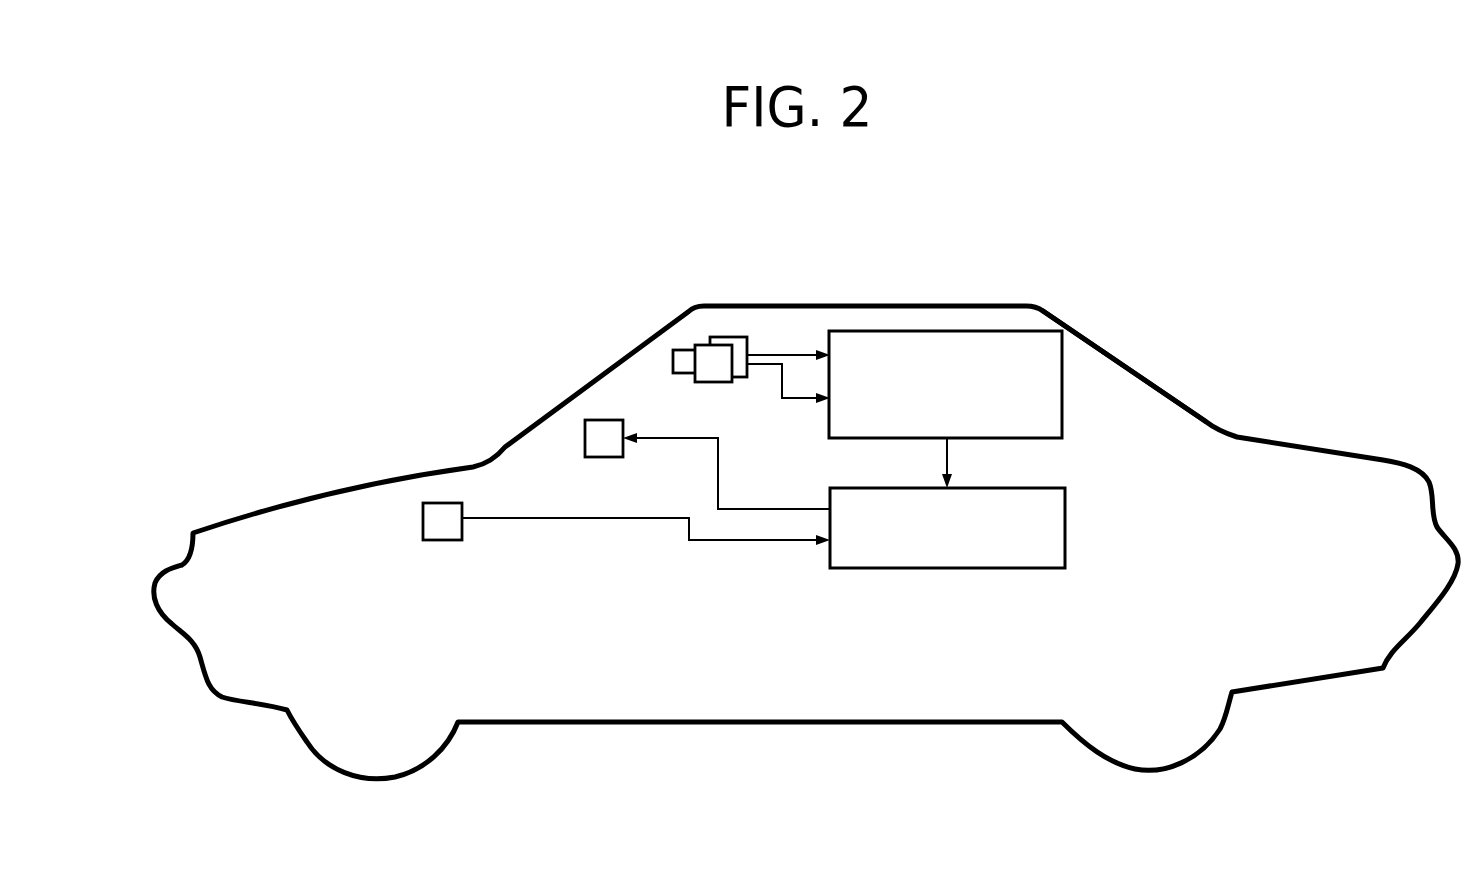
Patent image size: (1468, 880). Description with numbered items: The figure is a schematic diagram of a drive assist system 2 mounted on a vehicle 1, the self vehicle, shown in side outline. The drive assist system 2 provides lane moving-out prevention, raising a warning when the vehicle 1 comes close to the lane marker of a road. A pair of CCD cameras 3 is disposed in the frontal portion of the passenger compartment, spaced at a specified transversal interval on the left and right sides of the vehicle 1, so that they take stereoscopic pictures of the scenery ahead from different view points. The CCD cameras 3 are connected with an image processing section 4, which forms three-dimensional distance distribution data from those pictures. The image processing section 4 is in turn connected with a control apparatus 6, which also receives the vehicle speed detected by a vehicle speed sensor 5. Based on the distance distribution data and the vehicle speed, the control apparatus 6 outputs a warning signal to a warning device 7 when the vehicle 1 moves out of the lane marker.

The vehicle 1 is at (1267, 441).
The drive assist system 2 is at (1131, 400).
The CCD cameras 3 is at (703, 345).
The image processing section 4 is at (973, 331).
The vehicle speed sensor 5 is at (441, 503).
The control apparatus 6 is at (937, 569).
The warning device 7 is at (592, 420).